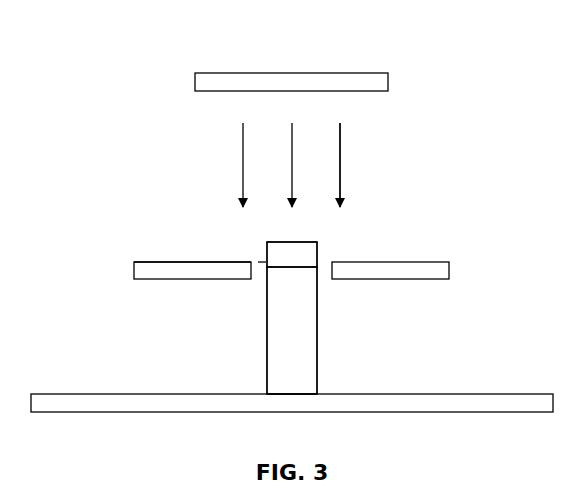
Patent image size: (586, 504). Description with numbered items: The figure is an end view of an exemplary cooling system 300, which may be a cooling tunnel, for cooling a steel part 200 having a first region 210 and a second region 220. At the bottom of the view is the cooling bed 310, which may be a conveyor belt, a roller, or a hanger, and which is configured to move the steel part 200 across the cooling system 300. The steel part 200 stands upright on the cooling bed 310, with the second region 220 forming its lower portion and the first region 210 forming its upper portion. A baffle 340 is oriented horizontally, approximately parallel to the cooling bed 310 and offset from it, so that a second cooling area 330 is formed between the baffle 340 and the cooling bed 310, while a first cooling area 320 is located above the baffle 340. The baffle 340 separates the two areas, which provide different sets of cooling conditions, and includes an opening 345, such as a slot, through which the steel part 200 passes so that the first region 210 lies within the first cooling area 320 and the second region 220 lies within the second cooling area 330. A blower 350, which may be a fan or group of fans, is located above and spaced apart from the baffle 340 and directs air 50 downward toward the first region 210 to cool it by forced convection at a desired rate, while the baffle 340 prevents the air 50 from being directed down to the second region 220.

The cooling system 300 is at (104, 42).
The blower 350 is at (325, 77).
The first cooling area 320 is at (208, 174).
The air 50 is at (340, 167).
The baffle 340 is at (197, 267).
The opening 345 is at (259, 259).
The steel part 200 is at (252, 337).
The first region 210 is at (303, 242).
The second region 220 is at (307, 352).
The second cooling area 330 is at (182, 320).
The cooling bed 310 is at (486, 400).